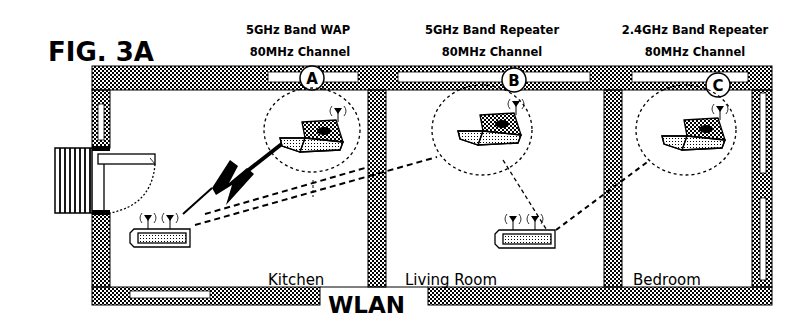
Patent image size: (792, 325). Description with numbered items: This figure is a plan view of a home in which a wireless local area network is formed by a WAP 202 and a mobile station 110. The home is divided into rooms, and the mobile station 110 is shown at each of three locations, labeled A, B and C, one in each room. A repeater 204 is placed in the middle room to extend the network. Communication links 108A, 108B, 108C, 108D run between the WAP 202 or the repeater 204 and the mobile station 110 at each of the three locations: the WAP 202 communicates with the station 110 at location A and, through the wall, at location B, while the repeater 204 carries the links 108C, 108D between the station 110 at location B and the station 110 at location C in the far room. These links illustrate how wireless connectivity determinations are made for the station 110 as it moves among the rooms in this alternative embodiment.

The communication link 108A is at (152, 163).
The communication link 108B is at (290, 193).
The communication link 108C is at (524, 185).
The communication link 108D is at (647, 176).
The mobile station 110 is at (299, 132).
The WAP 202 is at (183, 242).
The repeater 204 is at (515, 248).